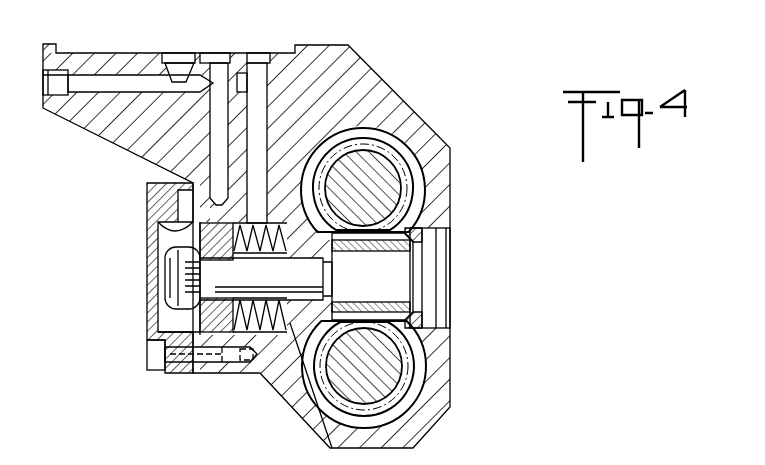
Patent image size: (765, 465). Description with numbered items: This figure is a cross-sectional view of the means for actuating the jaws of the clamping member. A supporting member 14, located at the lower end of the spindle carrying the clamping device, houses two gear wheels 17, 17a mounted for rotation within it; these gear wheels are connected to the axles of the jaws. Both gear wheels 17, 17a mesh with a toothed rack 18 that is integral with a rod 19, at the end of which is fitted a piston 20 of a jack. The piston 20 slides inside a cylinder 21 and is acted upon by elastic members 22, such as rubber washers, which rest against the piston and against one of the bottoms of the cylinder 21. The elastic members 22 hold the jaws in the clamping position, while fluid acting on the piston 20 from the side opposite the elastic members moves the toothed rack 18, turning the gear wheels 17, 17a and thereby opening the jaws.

The supporting member 14 is at (357, 78).
The gear wheel 17 is at (390, 167).
The gear wheel 17a is at (382, 372).
The toothed rack 18 is at (420, 260).
The rod 19 is at (293, 282).
The piston 20 is at (203, 313).
The cylinder 21 is at (147, 223).
The elastic members 22 is at (283, 337).